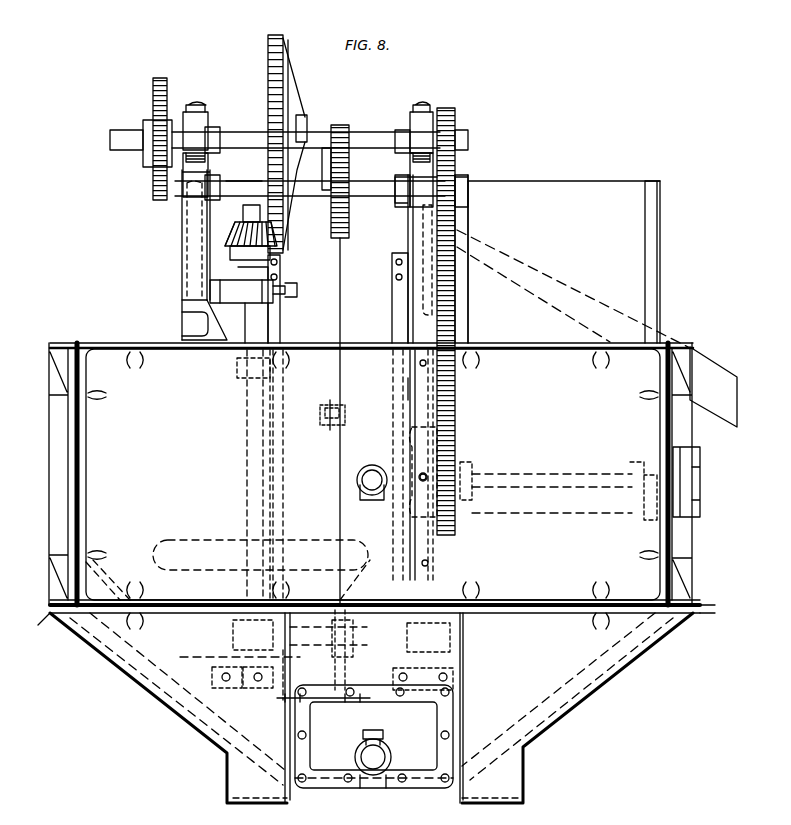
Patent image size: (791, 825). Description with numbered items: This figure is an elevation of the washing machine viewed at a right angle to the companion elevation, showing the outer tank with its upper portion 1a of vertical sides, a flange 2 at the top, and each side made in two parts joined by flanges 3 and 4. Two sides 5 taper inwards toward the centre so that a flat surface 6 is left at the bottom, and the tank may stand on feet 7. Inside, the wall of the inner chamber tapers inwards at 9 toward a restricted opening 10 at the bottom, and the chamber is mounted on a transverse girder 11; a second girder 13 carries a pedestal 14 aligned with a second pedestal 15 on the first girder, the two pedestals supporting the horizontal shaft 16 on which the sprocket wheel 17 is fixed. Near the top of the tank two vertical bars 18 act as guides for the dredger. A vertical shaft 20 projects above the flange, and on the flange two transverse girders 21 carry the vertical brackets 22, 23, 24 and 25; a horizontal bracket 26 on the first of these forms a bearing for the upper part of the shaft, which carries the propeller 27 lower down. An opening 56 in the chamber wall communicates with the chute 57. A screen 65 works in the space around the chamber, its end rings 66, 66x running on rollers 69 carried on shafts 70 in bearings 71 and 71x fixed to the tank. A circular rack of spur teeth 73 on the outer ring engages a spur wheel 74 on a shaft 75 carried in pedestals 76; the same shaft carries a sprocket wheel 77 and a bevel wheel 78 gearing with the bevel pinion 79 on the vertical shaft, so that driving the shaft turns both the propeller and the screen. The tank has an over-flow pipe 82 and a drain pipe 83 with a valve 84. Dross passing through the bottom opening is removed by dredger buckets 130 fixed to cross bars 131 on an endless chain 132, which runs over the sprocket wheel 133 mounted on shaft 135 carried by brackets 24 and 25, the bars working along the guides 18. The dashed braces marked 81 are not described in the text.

The upper portion of the tank 1a is at (75, 468).
The flange 2 is at (100, 346).
The flanges 3 is at (78, 437).
The flanges 4 is at (708, 610).
The tapering sides 5 is at (160, 688).
The flat surface 6 is at (322, 790).
The feet 7 is at (375, 784).
The tapering wall portion 9 is at (98, 560).
The restricted opening 10 is at (298, 655).
The transverse girder 11 is at (242, 687).
The second girder 13 is at (432, 700).
The pedestal 14 is at (428, 637).
The second pedestal 15 is at (232, 645).
The horizontal shaft 16 is at (464, 637).
The sprocket wheel 17 is at (347, 660).
The vertical bars 18 is at (272, 330).
The vertical shaft 20 is at (243, 214).
The transverse girders 21 is at (182, 325).
The vertical bracket 22 is at (182, 228).
The vertical bracket 23 is at (408, 222).
The vertical bracket 24 is at (182, 278).
The vertical bracket 25 is at (423, 242).
The horizontal bracket 26 is at (236, 303).
The propeller 27 is at (260, 555).
The opening 56 is at (410, 388).
The chute 57 is at (440, 427).
The screen 65 is at (564, 216).
The end ring 66 is at (652, 222).
The end ring 66x is at (462, 224).
The rollers 69 is at (474, 472).
The shafts 70 is at (558, 473).
The bearing 71 is at (700, 486).
The bearing 71x is at (418, 468).
The circular rack of spur teeth 73 is at (457, 182).
The spur wheel 74 is at (456, 126).
The shaft 75 is at (127, 146).
The pedestals 76 is at (196, 122).
The sprocket wheel 77 is at (166, 92).
The bevel wheel 78 is at (268, 58).
The bevel pinion 79 is at (236, 250).
The brace 81 is at (597, 328).
The over-flow pipe 82 is at (356, 482).
The drain pipe 83 is at (368, 786).
The valve 84 is at (388, 747).
The dredger buckets 130 is at (322, 757).
The cross bars 131 is at (372, 700).
The endless chain 132 is at (298, 290).
The sprocket wheel 133 is at (331, 236).
The shaft 135 is at (244, 188).